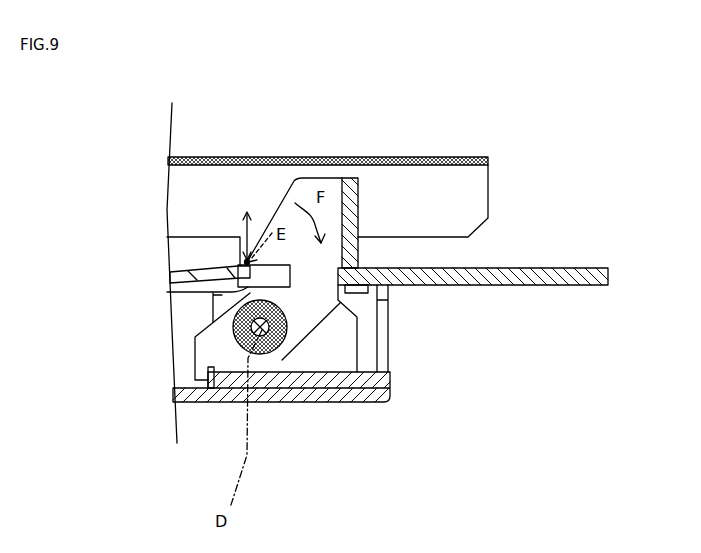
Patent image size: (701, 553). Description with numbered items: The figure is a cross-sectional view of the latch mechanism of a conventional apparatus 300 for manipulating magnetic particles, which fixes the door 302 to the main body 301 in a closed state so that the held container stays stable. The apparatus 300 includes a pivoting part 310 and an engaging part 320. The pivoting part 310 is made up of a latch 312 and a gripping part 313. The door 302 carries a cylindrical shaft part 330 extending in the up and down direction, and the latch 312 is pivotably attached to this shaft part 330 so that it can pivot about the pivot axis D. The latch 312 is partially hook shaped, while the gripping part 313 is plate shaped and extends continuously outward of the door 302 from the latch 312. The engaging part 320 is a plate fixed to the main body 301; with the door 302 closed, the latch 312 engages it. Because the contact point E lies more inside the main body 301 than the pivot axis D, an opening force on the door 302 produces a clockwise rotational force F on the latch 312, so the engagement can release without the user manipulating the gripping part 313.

The apparatus for manipulating magnetic particles 300 is at (538, 140).
The main body 301 is at (420, 157).
The door 302 is at (333, 402).
The pivoting part 310 is at (329, 176).
The latch 312 is at (268, 205).
The gripping part 313 is at (506, 268).
The engaging part 320 is at (172, 290).
The shaft part 330 is at (277, 348).